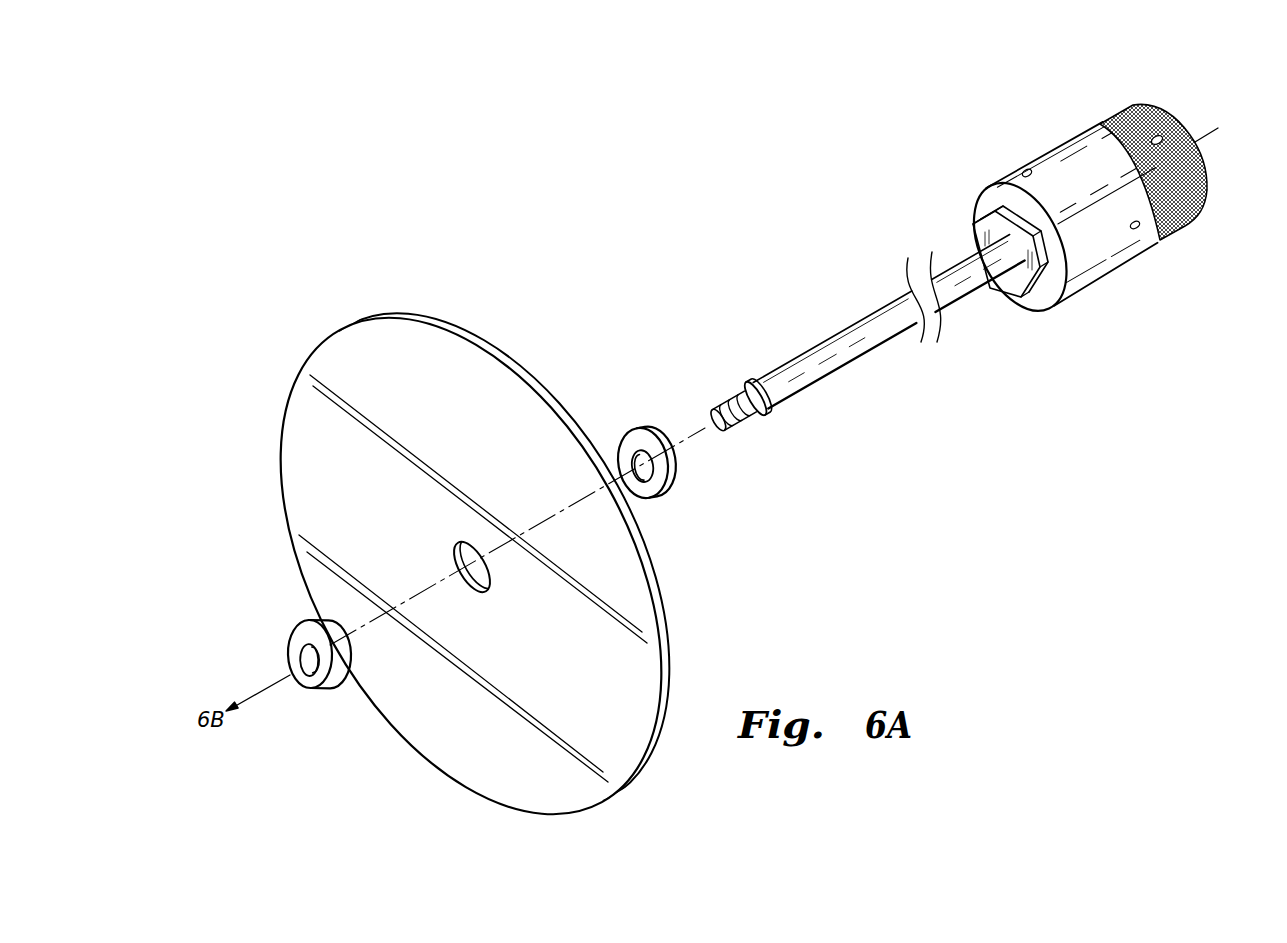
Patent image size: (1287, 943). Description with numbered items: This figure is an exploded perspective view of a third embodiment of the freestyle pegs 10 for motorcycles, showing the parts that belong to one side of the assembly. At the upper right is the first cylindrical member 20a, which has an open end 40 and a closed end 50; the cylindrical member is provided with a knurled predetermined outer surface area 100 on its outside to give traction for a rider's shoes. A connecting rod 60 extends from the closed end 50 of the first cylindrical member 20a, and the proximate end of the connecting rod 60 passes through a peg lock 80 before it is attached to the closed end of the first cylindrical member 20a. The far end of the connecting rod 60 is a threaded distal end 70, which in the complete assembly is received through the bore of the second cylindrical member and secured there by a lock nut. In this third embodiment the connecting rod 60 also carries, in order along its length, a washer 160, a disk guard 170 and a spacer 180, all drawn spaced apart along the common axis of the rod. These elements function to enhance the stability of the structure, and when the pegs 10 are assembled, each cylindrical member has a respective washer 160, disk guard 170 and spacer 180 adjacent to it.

The freestyle pegs 10 is at (975, 570).
The first cylindrical member 20a is at (1060, 145).
The open end 40 is at (1198, 129).
The closed end 50 is at (1036, 213).
The connecting rod 60 is at (958, 303).
The threaded distal end 70 is at (752, 418).
The peg lock 80 is at (1044, 292).
The knurled outer surface area 100 is at (1181, 245).
The washer 160 is at (667, 495).
The disk guard 170 is at (292, 528).
The spacer 180 is at (323, 693).